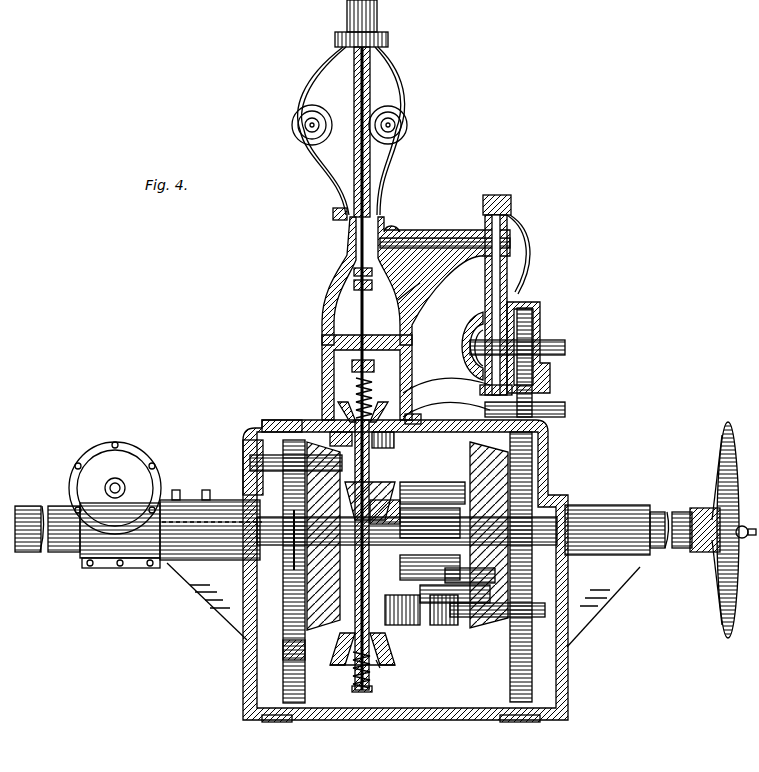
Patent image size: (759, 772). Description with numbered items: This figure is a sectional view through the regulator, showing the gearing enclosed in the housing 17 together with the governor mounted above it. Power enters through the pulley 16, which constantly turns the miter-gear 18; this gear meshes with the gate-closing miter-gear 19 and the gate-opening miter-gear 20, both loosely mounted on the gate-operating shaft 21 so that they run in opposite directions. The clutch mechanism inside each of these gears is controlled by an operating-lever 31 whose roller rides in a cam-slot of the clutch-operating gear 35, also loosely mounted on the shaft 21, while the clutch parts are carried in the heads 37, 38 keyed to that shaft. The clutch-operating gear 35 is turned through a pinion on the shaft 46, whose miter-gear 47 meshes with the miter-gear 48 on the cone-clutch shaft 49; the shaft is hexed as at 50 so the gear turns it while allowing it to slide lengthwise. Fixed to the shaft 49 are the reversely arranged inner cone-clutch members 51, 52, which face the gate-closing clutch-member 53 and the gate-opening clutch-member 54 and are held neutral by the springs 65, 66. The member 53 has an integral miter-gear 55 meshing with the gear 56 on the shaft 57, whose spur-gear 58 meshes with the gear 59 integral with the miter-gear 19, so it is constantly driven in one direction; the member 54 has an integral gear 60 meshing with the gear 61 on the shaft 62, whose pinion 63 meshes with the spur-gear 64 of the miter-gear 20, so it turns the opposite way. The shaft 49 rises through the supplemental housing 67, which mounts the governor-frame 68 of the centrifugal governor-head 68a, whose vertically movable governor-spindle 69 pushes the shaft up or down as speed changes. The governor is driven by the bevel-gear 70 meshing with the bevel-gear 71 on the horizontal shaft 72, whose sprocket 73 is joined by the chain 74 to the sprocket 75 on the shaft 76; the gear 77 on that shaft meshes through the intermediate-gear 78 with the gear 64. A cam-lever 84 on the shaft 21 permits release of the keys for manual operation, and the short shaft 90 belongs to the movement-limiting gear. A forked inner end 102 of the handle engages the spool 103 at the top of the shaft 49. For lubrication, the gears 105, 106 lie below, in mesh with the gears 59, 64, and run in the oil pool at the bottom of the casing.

The pulley 16 is at (442, 400).
The housing 17 is at (548, 462).
The miter-gear 18 is at (446, 420).
The gate-closing miter-gear 19 is at (305, 608).
The gate-opening miter-gear 20 is at (488, 460).
The gate-operating shaft 21 is at (47, 526).
The operating-lever 31 is at (452, 505).
The clutch-operating gear 35 is at (412, 414).
The head 37 is at (388, 500).
The head 38 is at (458, 508).
The shaft 46 is at (470, 586).
The miter-gear 47 is at (455, 600).
The miter-gear 48 is at (285, 596).
The cone-clutch shaft 49 is at (345, 642).
The hexed portion 50 is at (292, 578).
The inner cone-clutch member 51 is at (352, 408).
The inner cone-clutch member 52 is at (376, 668).
The gate-closing clutch-member 53 is at (380, 408).
The gate-opening clutch-member 54 is at (348, 668).
The miter-gear 55 is at (394, 440).
The gear 56 is at (340, 445).
The shaft 57 is at (246, 465).
The spur-gear 58 is at (290, 422).
The gear 59 is at (262, 486).
The gear 60 is at (290, 648).
The gear 61 is at (405, 628).
The shaft 62 is at (443, 627).
The pinion 63 is at (515, 640).
The spur-gear 64 is at (534, 448).
The spring 65 is at (373, 396).
The spring 66 is at (360, 689).
The supplemental housing 67 is at (322, 365).
The governor-frame 68 is at (325, 300).
The centrifugal governor-head 68a is at (405, 122).
The governor-spindle 69 is at (370, 160).
The bevel-gear 70 is at (333, 216).
The bevel-gear 71 is at (398, 228).
The horizontal shaft 72 is at (452, 236).
The sprocket 73 is at (512, 205).
The chain 74 is at (517, 292).
The sprocket 75 is at (478, 328).
The shaft 76 is at (474, 345).
The gear 77 is at (540, 312).
The intermediate-gear 78 is at (532, 386).
The cam-lever 84 is at (741, 540).
The short shaft 90 is at (105, 487).
The forked inner end 102 is at (352, 272).
The spool 103 is at (406, 300).
The gear 105 is at (290, 722).
The gear 106 is at (522, 722).